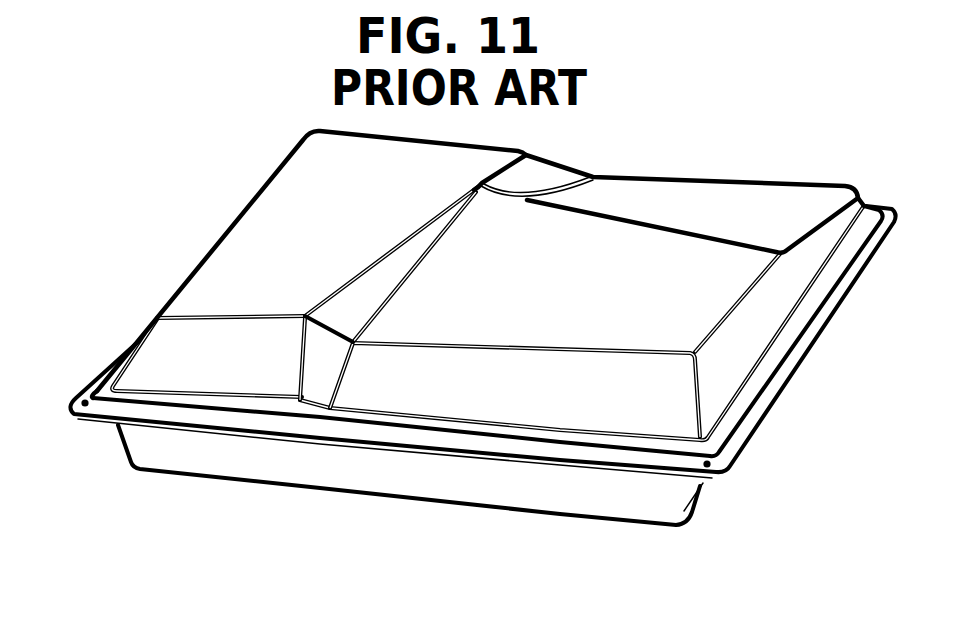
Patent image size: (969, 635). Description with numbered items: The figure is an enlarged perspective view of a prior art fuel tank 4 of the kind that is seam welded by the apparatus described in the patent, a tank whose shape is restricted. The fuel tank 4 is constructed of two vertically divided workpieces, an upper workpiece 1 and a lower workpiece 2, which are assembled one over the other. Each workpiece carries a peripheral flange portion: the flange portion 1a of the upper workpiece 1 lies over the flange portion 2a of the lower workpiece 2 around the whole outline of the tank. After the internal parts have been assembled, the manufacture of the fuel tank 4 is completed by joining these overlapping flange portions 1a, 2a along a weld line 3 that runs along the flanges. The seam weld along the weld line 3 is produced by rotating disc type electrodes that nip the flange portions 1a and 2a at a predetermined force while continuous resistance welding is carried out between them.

The workpiece 1 is at (476, 290).
The flange portion 1a is at (110, 377).
The workpiece 2 is at (477, 390).
The flange portion 2a is at (105, 421).
The weld line 3 is at (741, 414).
The fuel tank 4 is at (392, 510).